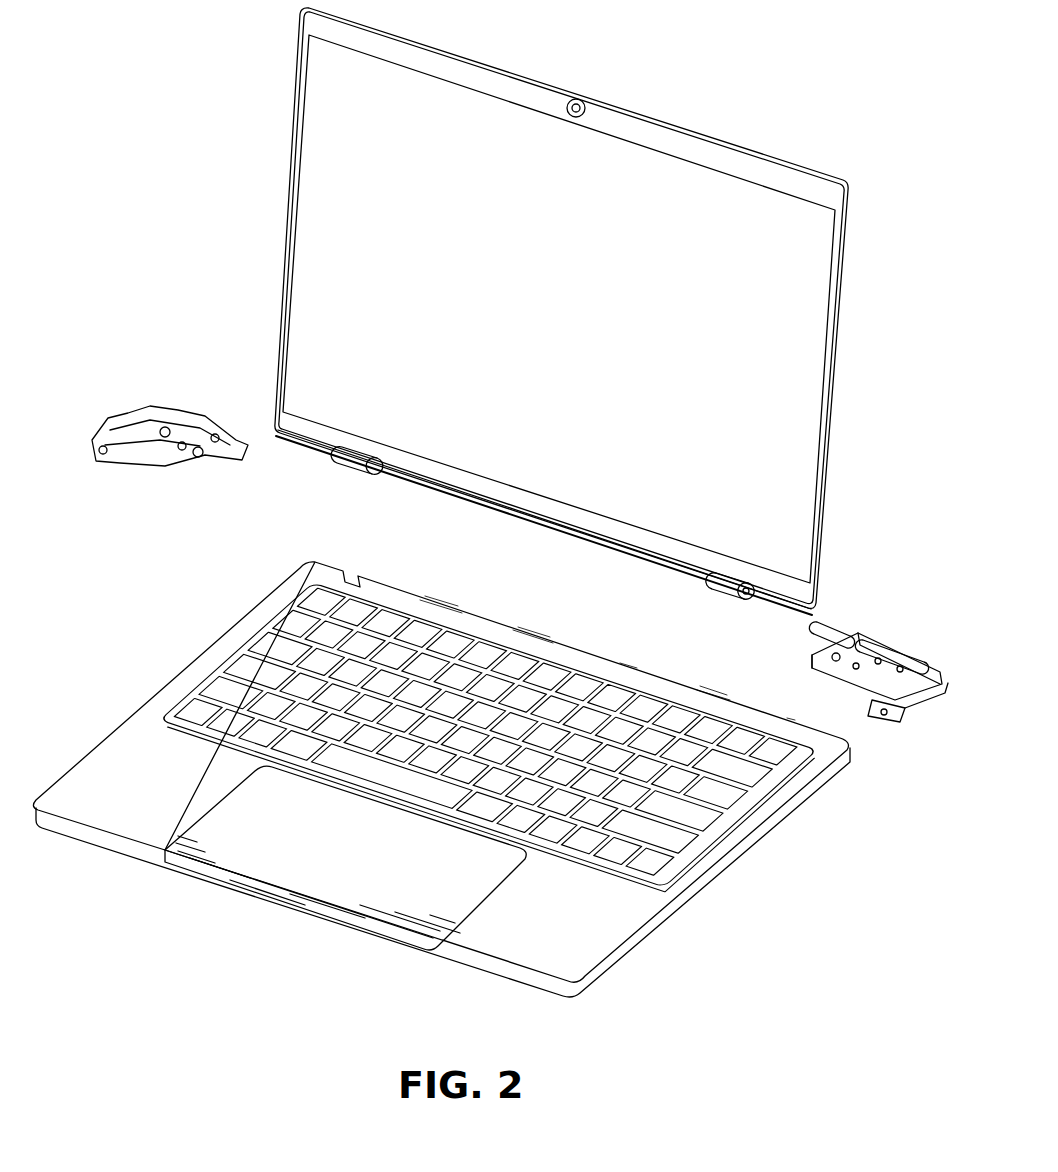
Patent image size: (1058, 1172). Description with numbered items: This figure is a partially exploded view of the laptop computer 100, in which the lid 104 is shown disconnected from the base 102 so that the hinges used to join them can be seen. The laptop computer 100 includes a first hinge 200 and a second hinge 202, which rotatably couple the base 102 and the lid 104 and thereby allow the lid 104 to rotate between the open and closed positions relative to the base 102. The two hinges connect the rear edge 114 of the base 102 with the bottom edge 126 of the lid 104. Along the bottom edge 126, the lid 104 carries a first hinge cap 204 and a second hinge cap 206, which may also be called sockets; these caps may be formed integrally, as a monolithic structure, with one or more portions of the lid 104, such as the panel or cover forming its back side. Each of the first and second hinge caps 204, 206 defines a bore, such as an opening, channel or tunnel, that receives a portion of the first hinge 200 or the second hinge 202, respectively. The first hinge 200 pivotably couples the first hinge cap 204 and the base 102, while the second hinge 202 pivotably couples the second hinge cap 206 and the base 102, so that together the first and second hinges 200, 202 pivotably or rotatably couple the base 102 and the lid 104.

The laptop computer 100 is at (655, 70).
The base 102 is at (122, 742).
The lid 104 is at (293, 224).
The rear edge 114 is at (407, 597).
The bottom edge 126 is at (522, 530).
The first hinge 200 is at (196, 392).
The second hinge 202 is at (862, 609).
The first hinge cap 204 is at (365, 452).
The second hinge cap 206 is at (724, 578).